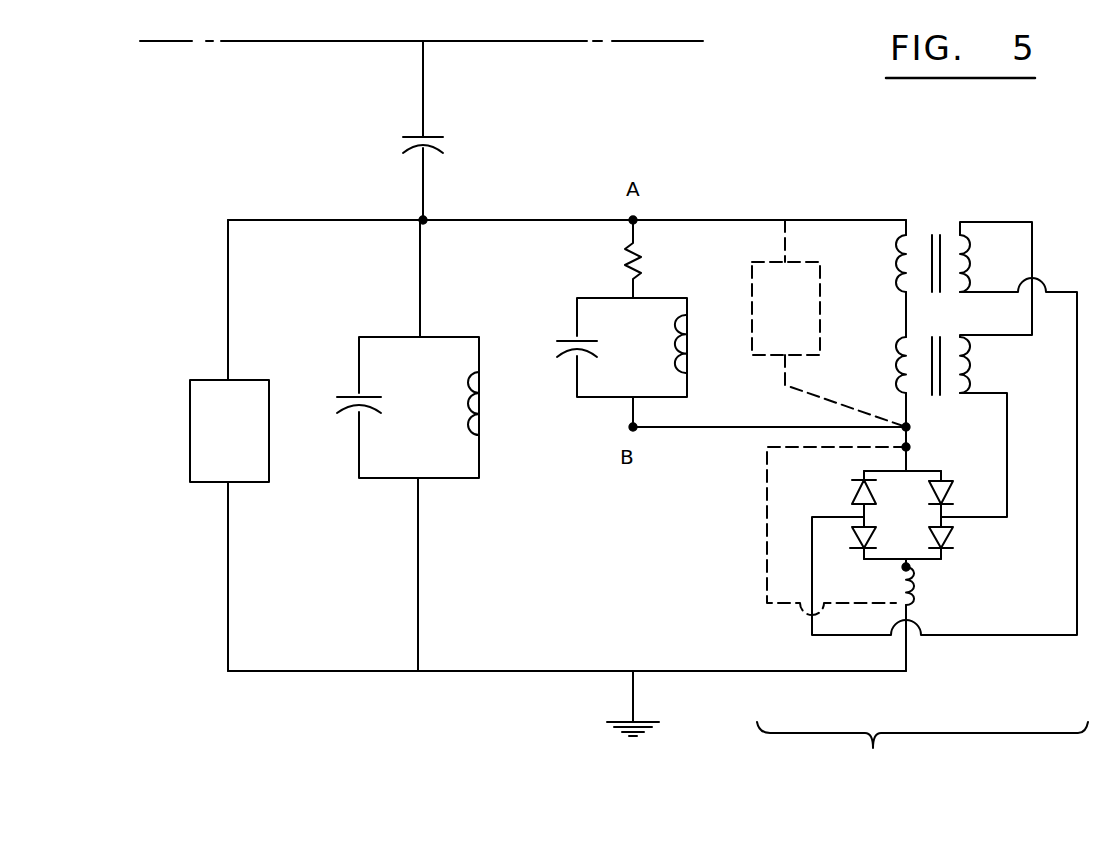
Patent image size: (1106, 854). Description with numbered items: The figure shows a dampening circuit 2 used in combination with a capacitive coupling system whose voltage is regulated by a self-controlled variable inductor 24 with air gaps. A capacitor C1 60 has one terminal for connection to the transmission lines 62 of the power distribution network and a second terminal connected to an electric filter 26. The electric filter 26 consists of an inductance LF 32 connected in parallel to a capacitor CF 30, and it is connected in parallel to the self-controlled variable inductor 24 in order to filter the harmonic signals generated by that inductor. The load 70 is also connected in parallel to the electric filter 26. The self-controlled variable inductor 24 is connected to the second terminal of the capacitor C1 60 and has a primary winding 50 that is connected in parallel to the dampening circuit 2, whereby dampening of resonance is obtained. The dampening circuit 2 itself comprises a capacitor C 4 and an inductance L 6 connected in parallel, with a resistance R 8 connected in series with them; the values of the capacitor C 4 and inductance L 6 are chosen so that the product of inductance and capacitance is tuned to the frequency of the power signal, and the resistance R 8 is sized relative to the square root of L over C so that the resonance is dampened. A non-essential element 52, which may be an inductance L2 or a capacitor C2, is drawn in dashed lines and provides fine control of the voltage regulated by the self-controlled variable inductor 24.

The dampening circuit 2 is at (706, 325).
The capacitor C 4 is at (563, 340).
The inductance L 6 is at (698, 348).
The resistance R 8 is at (645, 262).
The self-controlled variable inductor 24 is at (922, 616).
The electric filter 26 is at (390, 445).
The capacitor CF 30 is at (350, 392).
The inductance LF 32 is at (466, 398).
The primary winding 50 is at (872, 322).
The element (inductance L2 or capacitor C2) 52 is at (752, 303).
The capacitor C1 60 is at (416, 130).
The transmission lines 62 is at (561, 44).
The load 70 is at (229, 431).